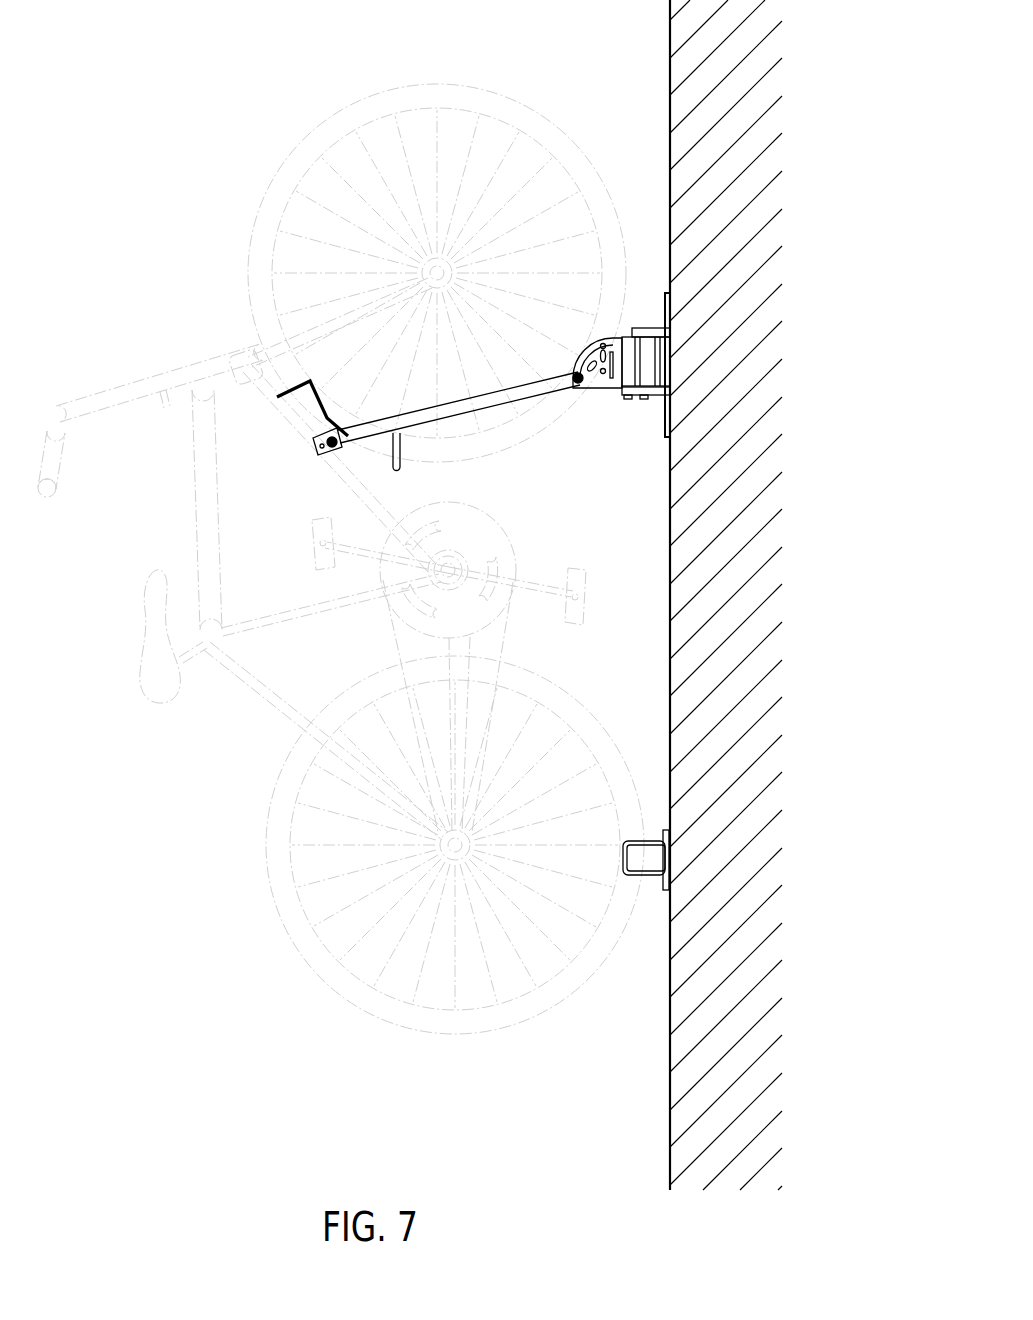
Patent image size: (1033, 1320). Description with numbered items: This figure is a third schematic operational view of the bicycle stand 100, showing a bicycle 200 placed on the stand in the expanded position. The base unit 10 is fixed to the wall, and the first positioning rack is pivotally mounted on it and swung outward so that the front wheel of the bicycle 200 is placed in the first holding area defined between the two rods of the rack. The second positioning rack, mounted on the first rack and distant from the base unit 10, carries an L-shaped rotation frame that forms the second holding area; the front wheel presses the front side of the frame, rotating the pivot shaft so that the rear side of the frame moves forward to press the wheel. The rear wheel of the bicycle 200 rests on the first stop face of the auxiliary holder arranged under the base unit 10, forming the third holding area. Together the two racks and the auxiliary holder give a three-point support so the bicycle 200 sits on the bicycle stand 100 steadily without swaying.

The base unit 10 is at (652, 320).
The bicycle stand 100 is at (605, 420).
The bicycle 200 is at (243, 692).